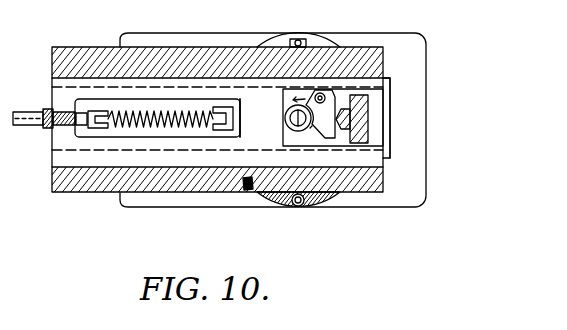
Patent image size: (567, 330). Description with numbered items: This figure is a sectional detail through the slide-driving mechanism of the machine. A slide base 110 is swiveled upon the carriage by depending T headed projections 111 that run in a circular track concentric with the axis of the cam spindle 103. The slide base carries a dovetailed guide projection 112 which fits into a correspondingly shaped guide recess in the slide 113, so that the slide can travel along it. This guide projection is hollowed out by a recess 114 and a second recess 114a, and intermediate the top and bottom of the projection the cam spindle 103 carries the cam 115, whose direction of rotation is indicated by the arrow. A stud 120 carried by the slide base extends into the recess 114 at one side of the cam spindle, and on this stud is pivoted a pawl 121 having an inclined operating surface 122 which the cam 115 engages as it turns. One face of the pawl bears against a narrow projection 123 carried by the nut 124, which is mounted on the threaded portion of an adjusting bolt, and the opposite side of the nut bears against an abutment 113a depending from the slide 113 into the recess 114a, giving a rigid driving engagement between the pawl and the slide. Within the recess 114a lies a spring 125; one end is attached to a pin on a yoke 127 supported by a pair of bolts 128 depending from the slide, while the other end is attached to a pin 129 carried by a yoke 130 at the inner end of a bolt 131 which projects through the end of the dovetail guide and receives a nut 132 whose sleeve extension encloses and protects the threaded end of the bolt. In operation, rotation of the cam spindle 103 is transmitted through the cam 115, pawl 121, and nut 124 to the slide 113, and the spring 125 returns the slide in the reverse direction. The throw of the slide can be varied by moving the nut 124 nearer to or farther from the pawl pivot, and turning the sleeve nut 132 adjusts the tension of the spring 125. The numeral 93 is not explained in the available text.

The lever 93 is at (0, 84).
The cam spindle 103 is at (290, 119).
The slide base 110 is at (162, 205).
The T headed projections 111 is at (298, 38).
The dovetailed guide projection 112 is at (60, 82).
The slide 113 is at (218, 163).
The abutment 113a is at (350, 153).
The recess 114 is at (345, 95).
The recess 114a is at (150, 100).
The cam 115 is at (292, 111).
The stud 120 is at (320, 95).
The pawl 121 is at (313, 125).
The inclined operating surface 122 is at (310, 128).
The narrow projection 123 is at (368, 108).
The nut 124 is at (392, 82).
The spring 125 is at (147, 114).
The yoke 127 is at (219, 107).
The bolts 128 is at (232, 108).
The pin 129 is at (86, 108).
The yoke 130 is at (78, 134).
The bolt 131 is at (112, 44).
The nut 132 is at (40, 120).